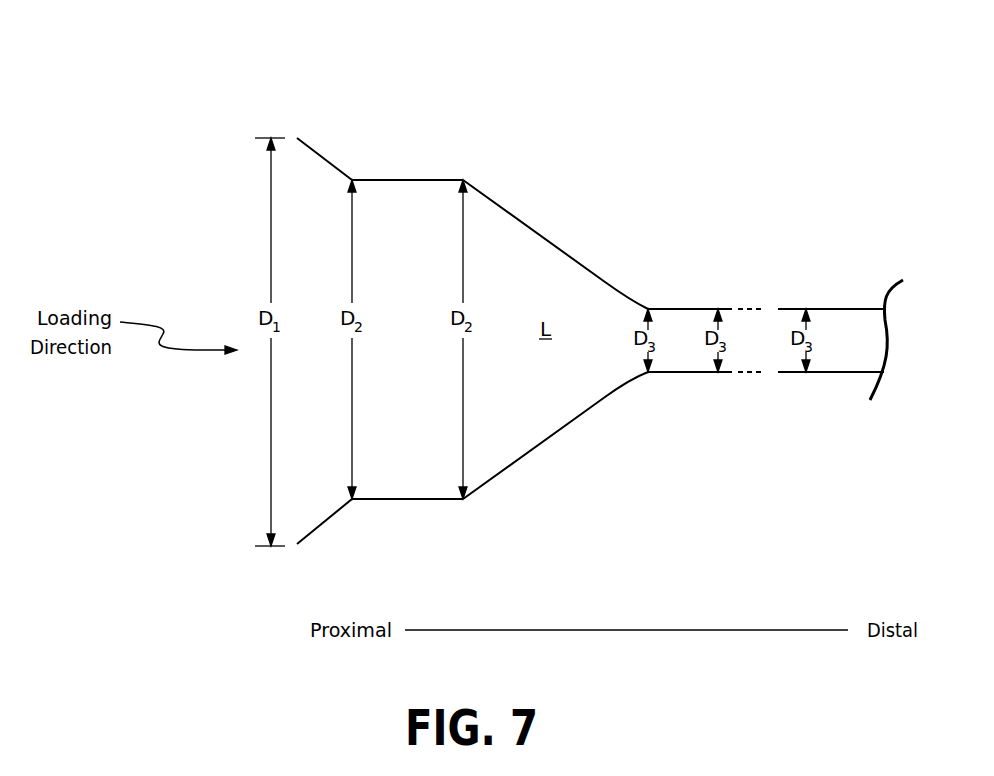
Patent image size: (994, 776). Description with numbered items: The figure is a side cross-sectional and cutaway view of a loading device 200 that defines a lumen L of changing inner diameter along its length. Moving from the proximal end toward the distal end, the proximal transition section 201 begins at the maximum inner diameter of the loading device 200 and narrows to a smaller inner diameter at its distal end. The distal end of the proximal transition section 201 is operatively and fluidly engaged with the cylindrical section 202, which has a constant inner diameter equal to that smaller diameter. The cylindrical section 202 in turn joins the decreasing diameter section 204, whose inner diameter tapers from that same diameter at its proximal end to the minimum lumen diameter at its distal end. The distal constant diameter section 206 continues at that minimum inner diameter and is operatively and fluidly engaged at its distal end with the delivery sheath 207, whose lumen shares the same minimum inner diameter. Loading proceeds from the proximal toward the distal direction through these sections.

The loading device 200 is at (795, 104).
The proximal transition section 201 is at (352, 93).
The cylindrical section of constant inner diameter 202 is at (463, 93).
The decreasing diameter section 204 is at (649, 93).
The distal constant diameter section 206 is at (733, 93).
The delivery sheath 207 is at (827, 309).